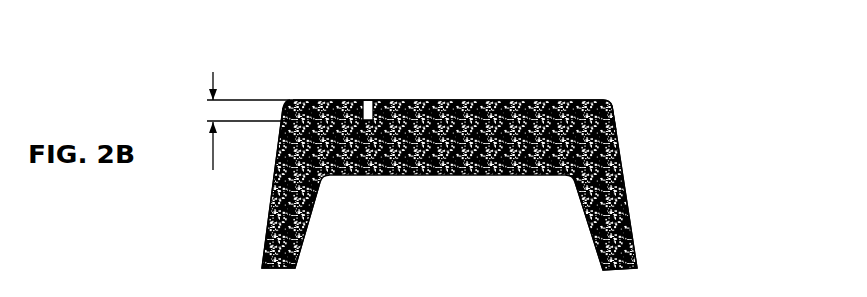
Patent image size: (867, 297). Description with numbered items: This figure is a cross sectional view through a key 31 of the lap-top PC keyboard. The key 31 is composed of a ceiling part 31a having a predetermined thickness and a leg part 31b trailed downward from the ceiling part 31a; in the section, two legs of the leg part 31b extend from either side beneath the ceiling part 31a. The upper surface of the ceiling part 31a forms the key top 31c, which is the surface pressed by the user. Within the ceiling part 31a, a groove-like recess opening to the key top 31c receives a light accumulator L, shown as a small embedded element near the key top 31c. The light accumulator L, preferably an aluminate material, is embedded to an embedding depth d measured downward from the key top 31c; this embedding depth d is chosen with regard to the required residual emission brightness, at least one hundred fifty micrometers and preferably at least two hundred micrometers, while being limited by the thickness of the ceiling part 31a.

The key 31 is at (562, 92).
The ceiling part 31a is at (612, 105).
The leg part 31b is at (270, 210).
The key top 31c is at (470, 100).
The light accumulator L is at (382, 100).
The embedding depth d is at (243, 121).